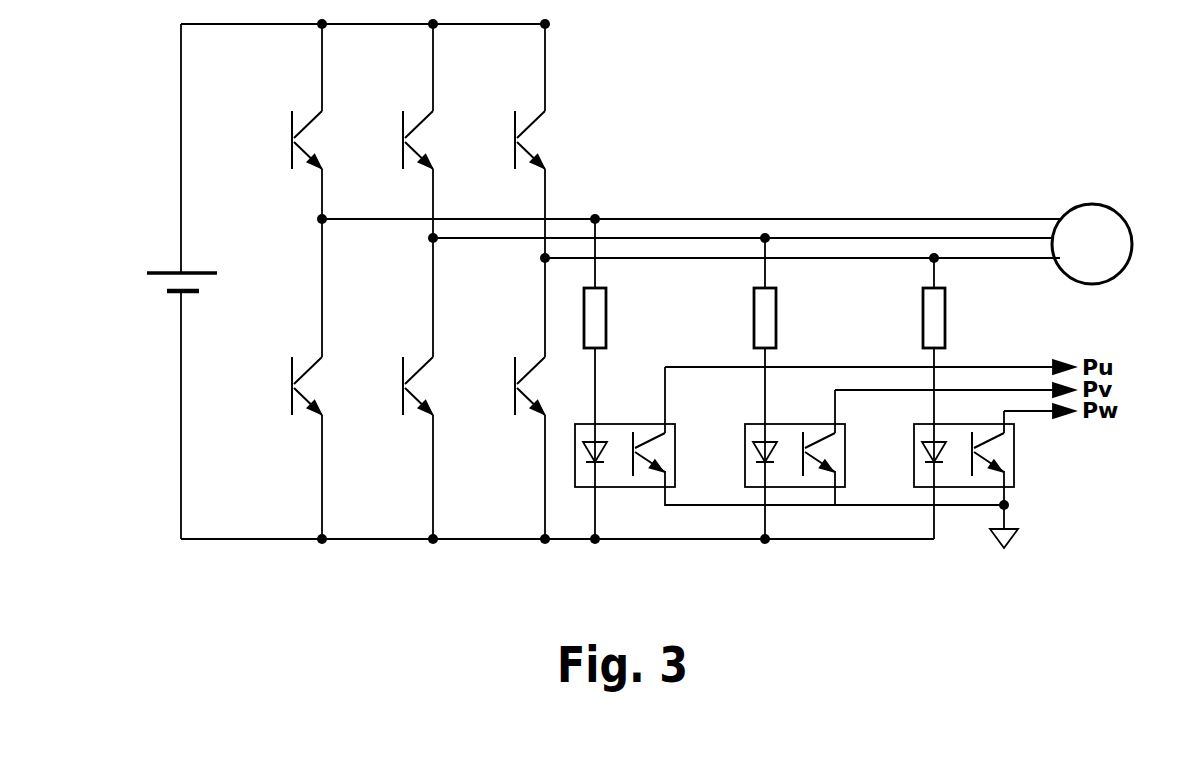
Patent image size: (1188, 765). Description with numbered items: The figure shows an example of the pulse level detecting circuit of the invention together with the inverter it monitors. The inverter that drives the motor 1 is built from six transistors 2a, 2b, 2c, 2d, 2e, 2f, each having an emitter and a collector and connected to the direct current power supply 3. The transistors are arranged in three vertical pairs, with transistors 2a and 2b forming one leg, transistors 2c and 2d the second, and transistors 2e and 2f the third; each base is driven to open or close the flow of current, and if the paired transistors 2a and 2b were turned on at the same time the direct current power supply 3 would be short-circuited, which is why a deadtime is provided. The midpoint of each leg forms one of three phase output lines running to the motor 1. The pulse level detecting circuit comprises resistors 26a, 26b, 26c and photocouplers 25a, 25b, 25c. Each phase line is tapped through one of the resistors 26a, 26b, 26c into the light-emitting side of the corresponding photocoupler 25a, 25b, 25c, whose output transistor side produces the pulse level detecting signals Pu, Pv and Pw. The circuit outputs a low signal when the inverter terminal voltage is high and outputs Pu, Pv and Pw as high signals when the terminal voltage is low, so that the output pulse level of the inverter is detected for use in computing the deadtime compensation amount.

The motor 1 is at (1133, 218).
The transistor 2a is at (326, 140).
The transistor 2b is at (327, 386).
The transistor 2c is at (437, 140).
The transistor 2d is at (438, 386).
The transistor 2e is at (549, 140).
The transistor 2f is at (546, 386).
The direct current power supply 3 is at (173, 307).
The photocoupler 25a is at (679, 491).
The photocoupler 25b is at (849, 491).
The photocoupler 25c is at (1018, 491).
The resistor 26a is at (608, 333).
The resistor 26b is at (778, 333).
The resistor 26c is at (947, 333).